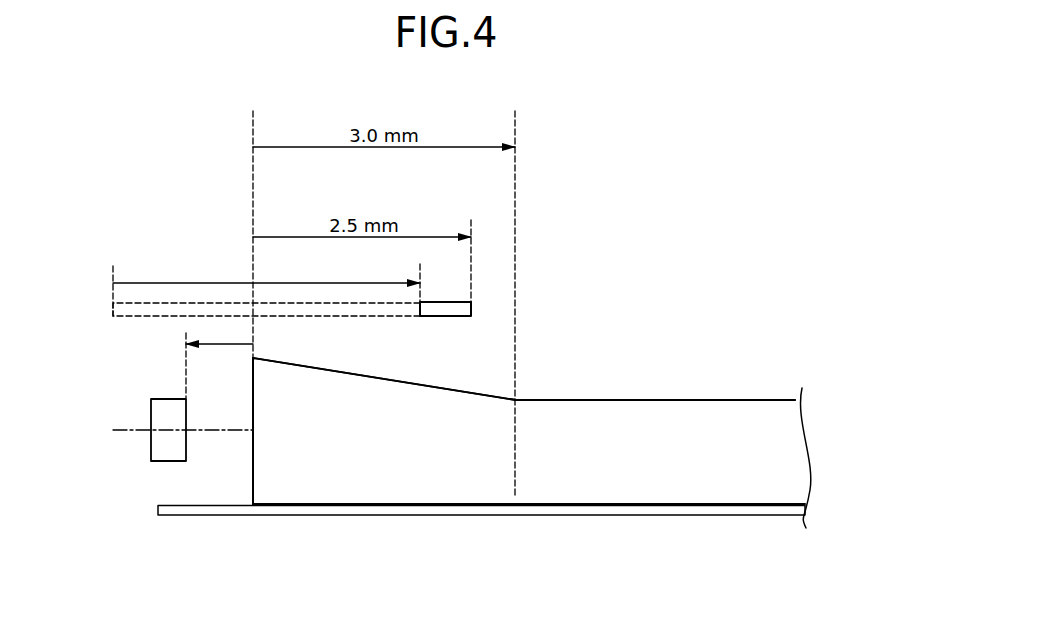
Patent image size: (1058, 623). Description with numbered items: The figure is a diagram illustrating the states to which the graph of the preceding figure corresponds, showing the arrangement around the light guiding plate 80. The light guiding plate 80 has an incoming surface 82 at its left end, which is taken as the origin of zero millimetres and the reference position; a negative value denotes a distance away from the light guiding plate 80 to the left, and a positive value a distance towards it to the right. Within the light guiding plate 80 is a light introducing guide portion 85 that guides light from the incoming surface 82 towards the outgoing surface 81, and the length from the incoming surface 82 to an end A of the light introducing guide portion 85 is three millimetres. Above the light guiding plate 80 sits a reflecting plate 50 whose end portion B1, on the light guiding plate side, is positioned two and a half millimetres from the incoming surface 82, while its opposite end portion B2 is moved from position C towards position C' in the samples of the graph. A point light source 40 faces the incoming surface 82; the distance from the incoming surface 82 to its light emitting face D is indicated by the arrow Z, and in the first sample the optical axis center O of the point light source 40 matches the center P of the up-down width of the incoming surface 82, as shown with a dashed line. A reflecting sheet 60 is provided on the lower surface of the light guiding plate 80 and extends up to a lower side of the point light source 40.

The point light source 40 is at (166, 455).
The reflecting plate 50 is at (442, 312).
The reflecting sheet 60 is at (192, 511).
The light guiding plate 80 is at (593, 420).
The outgoing surface 81 is at (708, 400).
The incoming surface 82 is at (254, 467).
The light introducing guide portion 85 is at (397, 475).
The end of the light introducing guide portion A is at (516, 400).
The end portion of the reflecting plate B1 is at (471, 310).
The end portion of the reflecting plate B2 is at (113, 311).
The position of end portion B2 C is at (263, 280).
The position of end portion B2 C' is at (421, 273).
The light emitting face D is at (186, 417).
The optical axis center O is at (186, 432).
The center of the up-down width of the incoming surface P is at (253, 430).
The distance from the incoming surface to the light emitting face Z is at (222, 348).